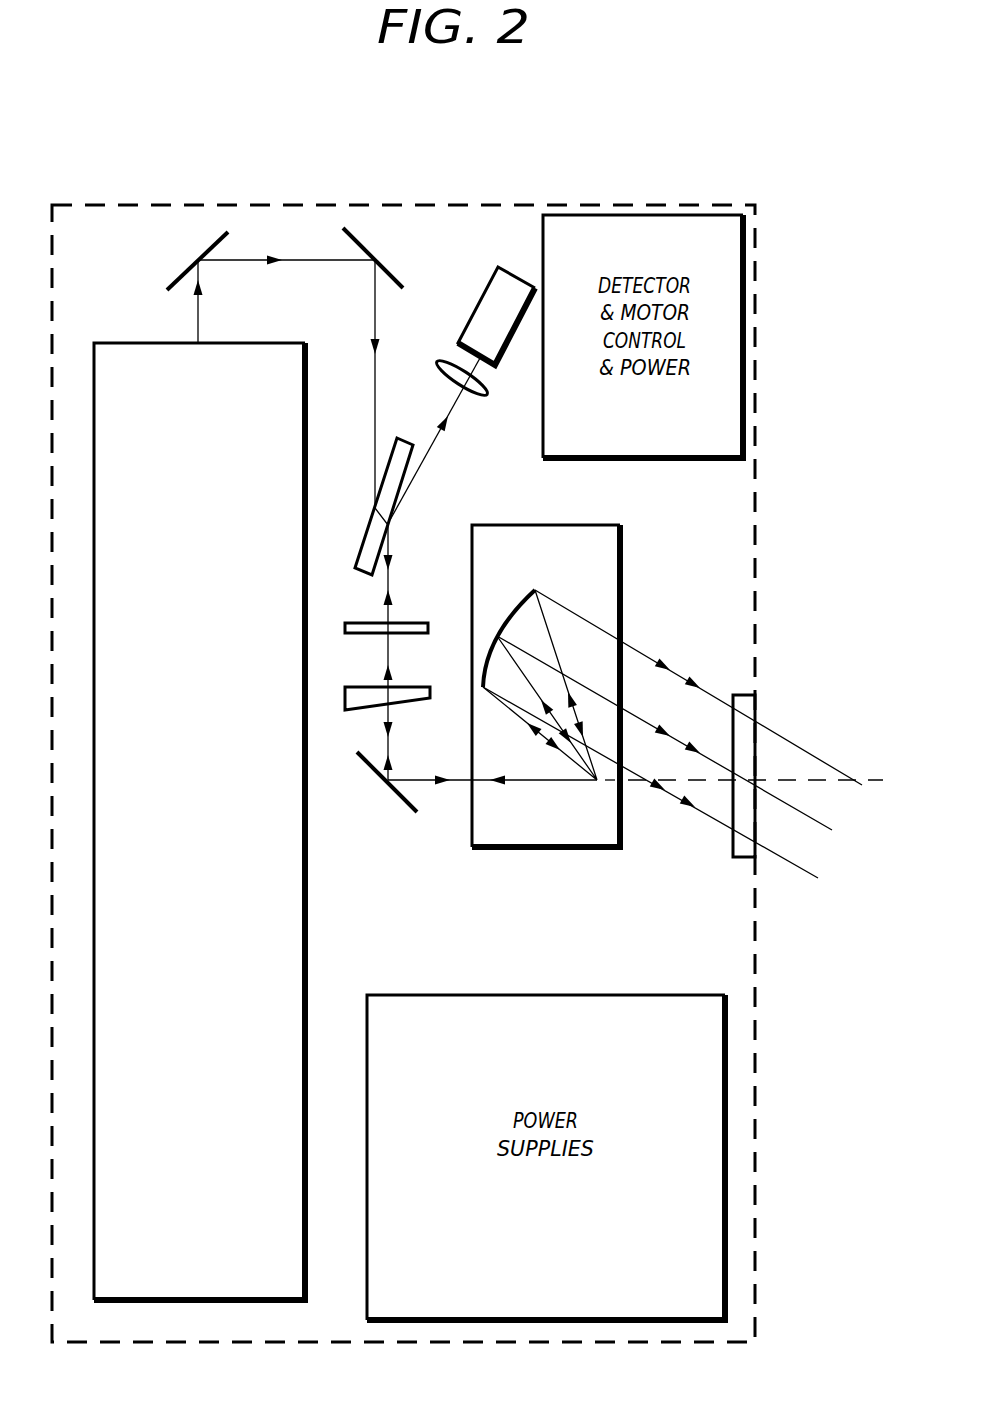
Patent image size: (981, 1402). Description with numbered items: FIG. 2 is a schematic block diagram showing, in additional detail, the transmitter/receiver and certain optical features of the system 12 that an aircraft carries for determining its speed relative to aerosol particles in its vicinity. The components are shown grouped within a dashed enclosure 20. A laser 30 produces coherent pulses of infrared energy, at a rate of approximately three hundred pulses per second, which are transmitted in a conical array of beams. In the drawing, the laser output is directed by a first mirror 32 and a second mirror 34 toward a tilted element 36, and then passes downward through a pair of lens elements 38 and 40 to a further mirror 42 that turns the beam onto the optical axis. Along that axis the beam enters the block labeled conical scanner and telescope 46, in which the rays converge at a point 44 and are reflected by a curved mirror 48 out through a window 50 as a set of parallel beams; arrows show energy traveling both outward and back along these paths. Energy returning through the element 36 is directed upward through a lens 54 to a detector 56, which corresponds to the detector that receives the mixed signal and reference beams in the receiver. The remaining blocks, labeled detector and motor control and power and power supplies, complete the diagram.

The system 12 is at (826, 474).
The housing 20 is at (757, 1000).
The laser 30 is at (308, 953).
The mirror 32 is at (177, 280).
The mirror 34 is at (393, 270).
The beam splitter 36 is at (375, 523).
The lens 38 is at (418, 620).
The lens 40 is at (358, 710).
The mirror 42 is at (403, 800).
The focal point 44 is at (597, 782).
The conical scanner and telescope 46 is at (550, 853).
The scanning mirror 48 is at (513, 610).
The window 50 is at (757, 710).
The lens 54 is at (485, 397).
The detector 56 is at (480, 300).